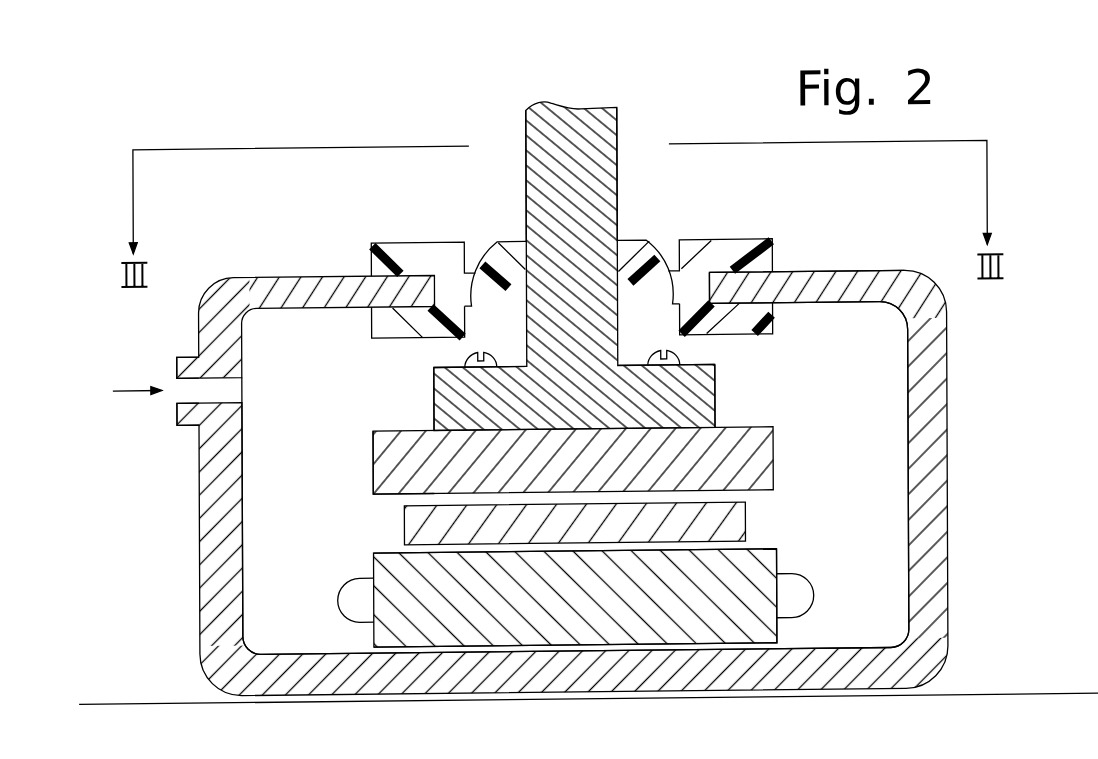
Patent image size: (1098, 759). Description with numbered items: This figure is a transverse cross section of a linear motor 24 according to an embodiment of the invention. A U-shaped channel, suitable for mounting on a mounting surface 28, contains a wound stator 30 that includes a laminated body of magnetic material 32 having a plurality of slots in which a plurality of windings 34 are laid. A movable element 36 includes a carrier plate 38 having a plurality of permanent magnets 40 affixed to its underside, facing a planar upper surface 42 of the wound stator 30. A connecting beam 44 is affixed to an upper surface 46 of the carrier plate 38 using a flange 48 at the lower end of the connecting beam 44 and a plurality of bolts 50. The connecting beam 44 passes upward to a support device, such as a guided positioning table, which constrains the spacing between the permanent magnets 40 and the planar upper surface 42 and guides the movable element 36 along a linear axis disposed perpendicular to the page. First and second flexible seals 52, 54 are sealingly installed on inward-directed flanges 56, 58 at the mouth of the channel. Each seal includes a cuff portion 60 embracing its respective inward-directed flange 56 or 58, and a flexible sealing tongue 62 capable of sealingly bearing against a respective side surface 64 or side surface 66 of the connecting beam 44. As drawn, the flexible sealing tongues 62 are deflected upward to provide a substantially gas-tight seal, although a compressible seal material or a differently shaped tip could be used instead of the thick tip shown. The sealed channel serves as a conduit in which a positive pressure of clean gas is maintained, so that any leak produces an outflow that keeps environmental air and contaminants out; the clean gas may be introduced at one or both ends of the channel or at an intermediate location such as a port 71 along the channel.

The linear motor 24 is at (1024, 145).
The mounting surface 28 is at (990, 699).
The wound stator 30 is at (554, 625).
The laminated body of magnetic material 32 is at (757, 610).
The windings 34 is at (796, 596).
The movable element 36 is at (825, 409).
The carrier plate 38 is at (775, 458).
The permanent magnets 40 is at (746, 523).
The planar upper surface 42 is at (778, 553).
The connecting beam 44 is at (597, 137).
The upper surface 46 is at (400, 443).
The flange 48 is at (718, 398).
The bolts 50 is at (680, 352).
The first flexible seal 52 is at (731, 244).
The second flexible seal 54 is at (472, 292).
The inward-directed flange 56 is at (865, 274).
The inward-directed flange 58 is at (388, 290).
The cuff portion 60 is at (773, 254).
The flexible sealing tongue 62 is at (649, 258).
The side surface 64 is at (616, 202).
The side surface 66 is at (524, 132).
The port 71 is at (185, 354).